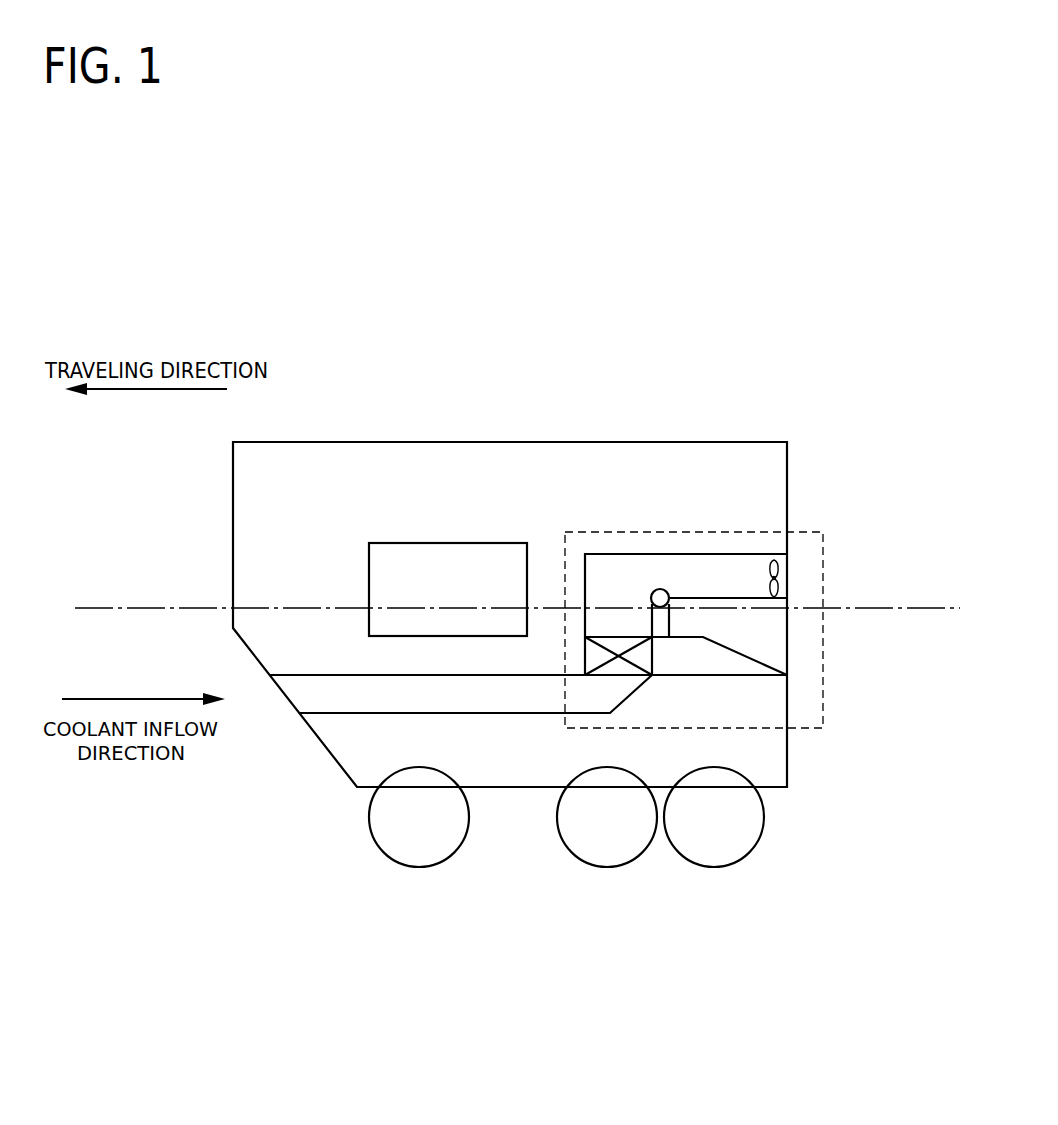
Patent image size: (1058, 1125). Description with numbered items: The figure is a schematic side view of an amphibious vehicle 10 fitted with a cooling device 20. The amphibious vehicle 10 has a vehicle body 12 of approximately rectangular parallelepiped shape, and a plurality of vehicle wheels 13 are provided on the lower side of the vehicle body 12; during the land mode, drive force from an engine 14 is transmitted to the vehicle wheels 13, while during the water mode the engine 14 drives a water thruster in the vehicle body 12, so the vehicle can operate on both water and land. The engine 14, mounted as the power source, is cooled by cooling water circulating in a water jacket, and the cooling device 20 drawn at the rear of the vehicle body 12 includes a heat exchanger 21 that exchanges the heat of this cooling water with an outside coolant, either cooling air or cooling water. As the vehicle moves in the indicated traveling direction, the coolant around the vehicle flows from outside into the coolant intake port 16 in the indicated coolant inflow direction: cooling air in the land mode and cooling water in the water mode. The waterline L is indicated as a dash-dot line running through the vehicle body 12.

The amphibious vehicle 10 is at (320, 289).
The vehicle body 12 is at (582, 442).
The vehicle wheel 13 is at (423, 868).
The engine 14 is at (447, 542).
The coolant intake port 16 is at (285, 700).
The cooling device 20 is at (683, 530).
The heat exchanger 21 is at (623, 676).
The waterline L is at (888, 607).